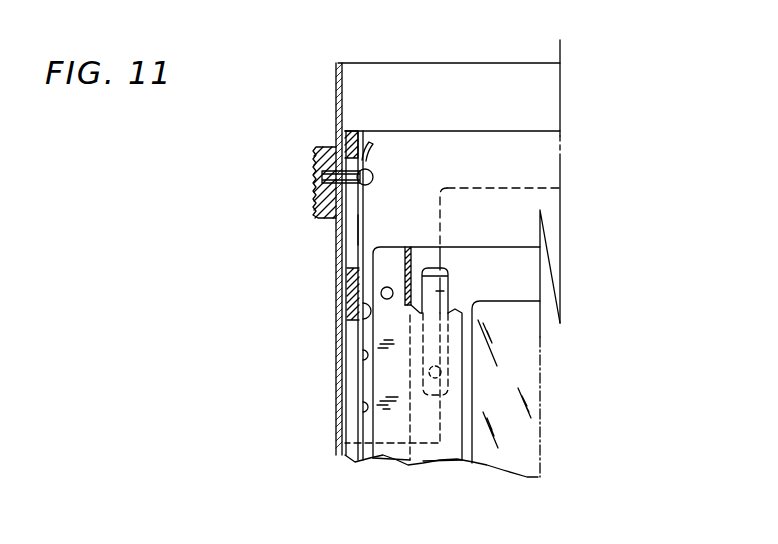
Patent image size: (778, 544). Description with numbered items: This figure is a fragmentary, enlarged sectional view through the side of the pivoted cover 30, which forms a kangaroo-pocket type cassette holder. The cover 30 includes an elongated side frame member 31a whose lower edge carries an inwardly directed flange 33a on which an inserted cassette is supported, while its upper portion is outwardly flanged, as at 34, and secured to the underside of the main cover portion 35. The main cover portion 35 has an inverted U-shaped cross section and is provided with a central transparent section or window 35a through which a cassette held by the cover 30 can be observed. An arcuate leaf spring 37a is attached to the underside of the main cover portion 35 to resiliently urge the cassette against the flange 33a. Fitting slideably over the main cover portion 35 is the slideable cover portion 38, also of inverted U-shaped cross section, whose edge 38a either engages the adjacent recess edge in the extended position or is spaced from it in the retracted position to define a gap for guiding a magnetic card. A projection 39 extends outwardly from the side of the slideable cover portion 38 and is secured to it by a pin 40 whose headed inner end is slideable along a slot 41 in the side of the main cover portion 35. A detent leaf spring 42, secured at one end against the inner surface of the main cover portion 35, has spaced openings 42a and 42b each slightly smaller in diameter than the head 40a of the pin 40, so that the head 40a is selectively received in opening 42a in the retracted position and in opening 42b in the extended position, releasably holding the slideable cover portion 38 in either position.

The cover 30 is at (296, 305).
The side frame member 31a is at (415, 252).
The inwardly directed flange 33a is at (430, 458).
The outward flange 34 is at (392, 461).
The main cover portion 35 is at (551, 162).
The transparent section or window 35a is at (535, 368).
The arcuate leaf spring 37a is at (449, 274).
The slideable cover portion 38 is at (551, 91).
The edge of slideable cover portion 38a is at (461, 63).
The projection 39 is at (312, 208).
The pin 40 is at (330, 172).
The head of pin 40a is at (374, 179).
The slot 41 is at (350, 254).
The leaf spring 42 is at (358, 325).
The opening 42a is at (365, 238).
The opening 42b is at (372, 165).